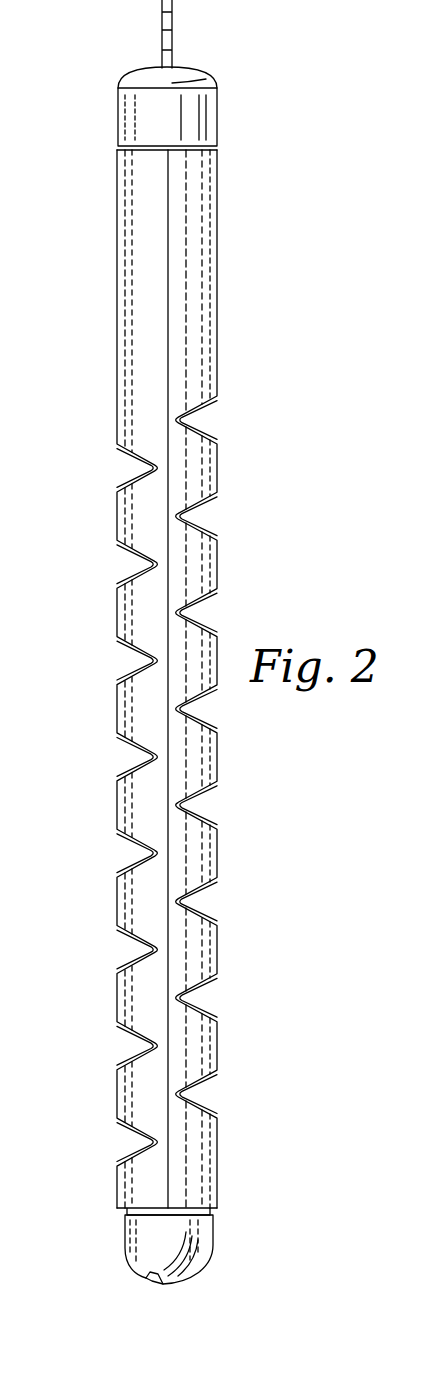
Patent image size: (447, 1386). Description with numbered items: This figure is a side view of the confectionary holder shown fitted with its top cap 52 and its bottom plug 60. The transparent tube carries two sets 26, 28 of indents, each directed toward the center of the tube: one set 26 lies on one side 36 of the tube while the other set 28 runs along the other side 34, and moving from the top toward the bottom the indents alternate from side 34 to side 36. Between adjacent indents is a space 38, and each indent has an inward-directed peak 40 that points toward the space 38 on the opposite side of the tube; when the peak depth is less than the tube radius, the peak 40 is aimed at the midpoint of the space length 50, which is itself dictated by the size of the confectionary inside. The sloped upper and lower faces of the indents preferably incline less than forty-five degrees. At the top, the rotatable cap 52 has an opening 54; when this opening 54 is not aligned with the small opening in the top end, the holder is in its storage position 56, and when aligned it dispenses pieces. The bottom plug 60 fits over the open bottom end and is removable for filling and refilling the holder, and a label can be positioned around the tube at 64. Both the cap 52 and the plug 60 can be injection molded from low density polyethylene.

The bottom plug 60 is at (222, 121).
The label position 64 is at (219, 276).
The space length 50 is at (218, 472).
The first set of indents 26 is at (221, 527).
The space 38 is at (218, 568).
The second set of indents 28 is at (106, 570).
The storage position 56 is at (243, 810).
The other side of tube 34 is at (106, 908).
The one side of tube 36 is at (238, 953).
The peak 40 is at (181, 993).
The cap 52 is at (219, 1247).
The cap opening 54 is at (148, 1275).